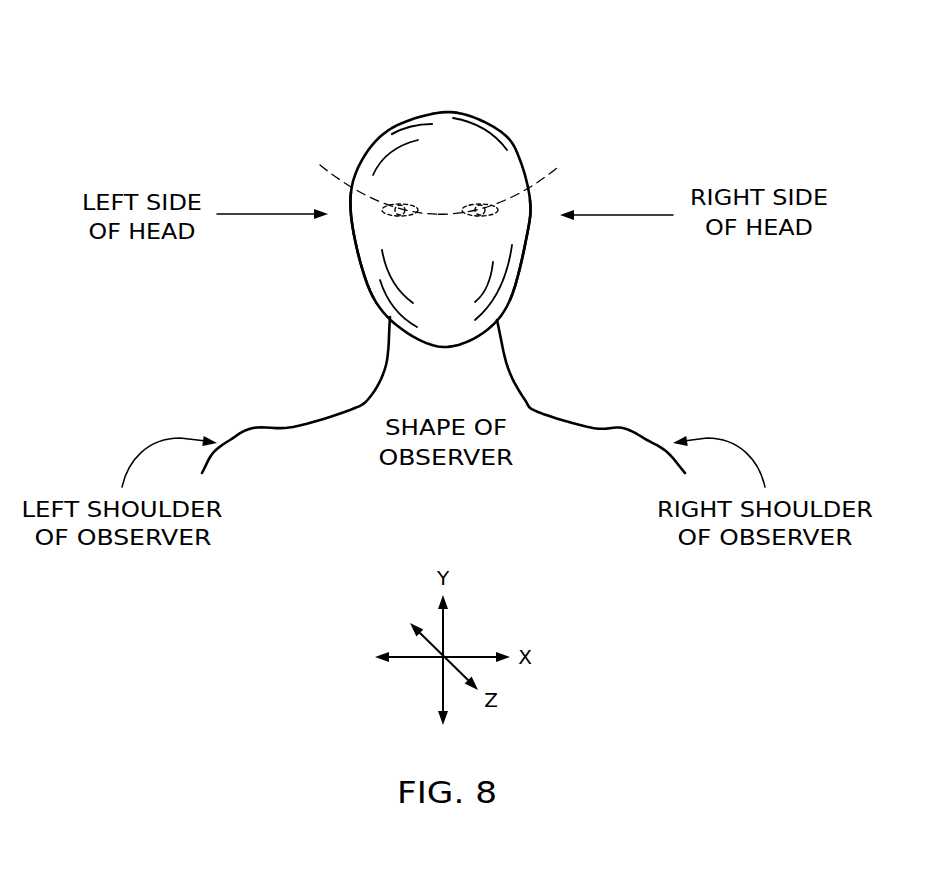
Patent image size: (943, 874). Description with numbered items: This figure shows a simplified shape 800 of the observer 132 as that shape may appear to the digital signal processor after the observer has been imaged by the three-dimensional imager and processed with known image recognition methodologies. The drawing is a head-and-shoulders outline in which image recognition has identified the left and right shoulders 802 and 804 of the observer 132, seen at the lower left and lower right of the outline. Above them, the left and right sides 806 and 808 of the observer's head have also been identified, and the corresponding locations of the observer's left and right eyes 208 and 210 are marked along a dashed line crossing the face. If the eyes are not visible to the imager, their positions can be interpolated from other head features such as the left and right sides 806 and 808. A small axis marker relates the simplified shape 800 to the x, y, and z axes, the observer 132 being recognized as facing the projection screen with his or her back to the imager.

The simplified shape 800 is at (362, 70).
The observer 132 is at (500, 112).
The left eye 208 is at (369, 175).
The right eye 210 is at (510, 177).
The left side of head 806 is at (360, 247).
The right side of head 808 is at (520, 252).
The left shoulder 802 is at (253, 428).
The right shoulder 804 is at (623, 428).